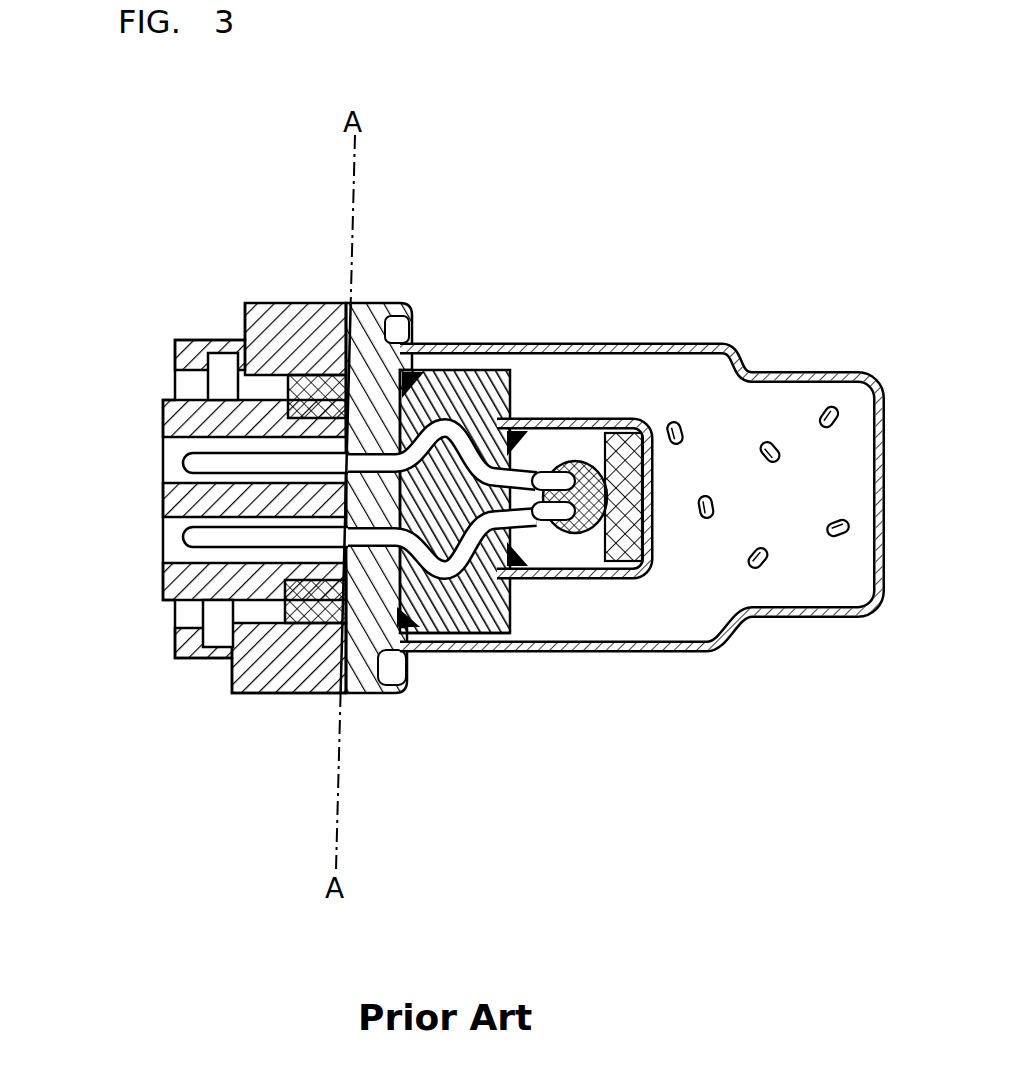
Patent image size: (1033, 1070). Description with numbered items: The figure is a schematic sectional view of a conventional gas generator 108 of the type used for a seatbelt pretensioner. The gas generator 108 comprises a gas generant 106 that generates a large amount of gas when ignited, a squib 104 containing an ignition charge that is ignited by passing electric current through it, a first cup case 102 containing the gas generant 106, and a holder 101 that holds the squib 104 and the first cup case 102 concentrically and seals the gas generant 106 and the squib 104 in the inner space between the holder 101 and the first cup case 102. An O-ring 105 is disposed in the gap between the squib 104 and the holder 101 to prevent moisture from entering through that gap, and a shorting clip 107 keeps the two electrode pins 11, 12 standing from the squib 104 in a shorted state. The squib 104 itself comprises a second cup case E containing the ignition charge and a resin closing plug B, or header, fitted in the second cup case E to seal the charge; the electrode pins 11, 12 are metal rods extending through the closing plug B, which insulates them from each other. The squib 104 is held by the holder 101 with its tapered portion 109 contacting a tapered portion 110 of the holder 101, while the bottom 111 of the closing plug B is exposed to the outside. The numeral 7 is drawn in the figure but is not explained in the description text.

The holder 101 is at (318, 303).
The first cup case 102 is at (790, 371).
The squib 104 is at (480, 343).
The O-ring 105 is at (404, 372).
The gas generant 106 is at (833, 404).
The shorting clip 107 is at (167, 412).
The gas generator 108 is at (607, 712).
The tapered portion 109 is at (437, 643).
The tapered portion 110 is at (360, 622).
The bottom 111 is at (332, 527).
The electrode pin 11 is at (182, 459).
The electrode pin 12 is at (182, 540).
The thermistor element 7 is at (623, 414).
The closing plug B is at (500, 377).
The second cup case E is at (583, 411).